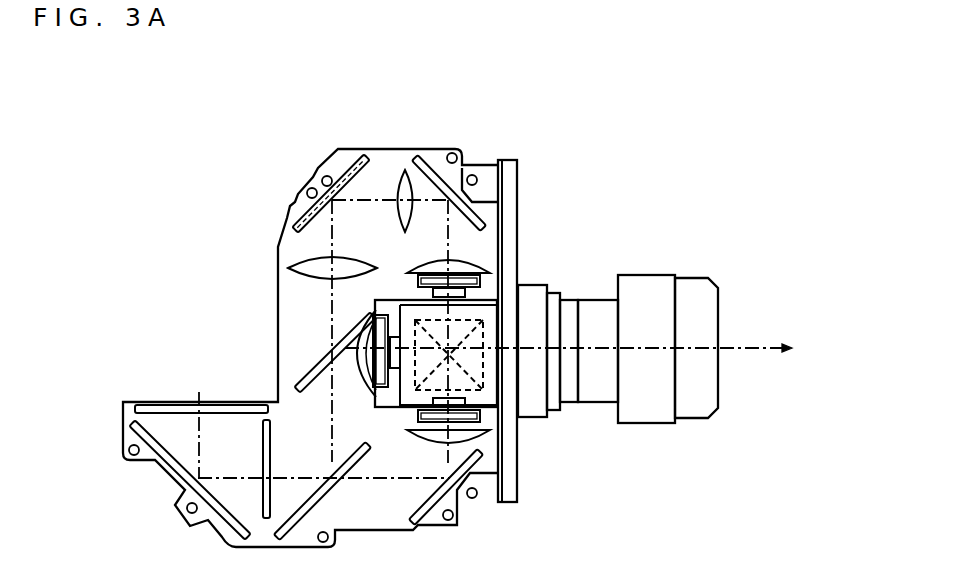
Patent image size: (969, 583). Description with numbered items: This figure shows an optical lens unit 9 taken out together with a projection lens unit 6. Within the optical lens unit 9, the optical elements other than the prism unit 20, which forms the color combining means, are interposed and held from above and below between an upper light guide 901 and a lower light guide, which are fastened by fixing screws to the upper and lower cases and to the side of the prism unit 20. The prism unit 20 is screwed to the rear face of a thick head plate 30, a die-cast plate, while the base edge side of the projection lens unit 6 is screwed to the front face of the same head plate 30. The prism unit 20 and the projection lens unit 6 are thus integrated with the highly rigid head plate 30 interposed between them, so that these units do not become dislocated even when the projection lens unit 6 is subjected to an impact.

The optical lens unit 9 is at (414, 140).
The upper light guide 901 is at (262, 312).
The prism unit 20 is at (496, 300).
The head plate 30 is at (513, 470).
The projection lens unit 6 is at (700, 268).